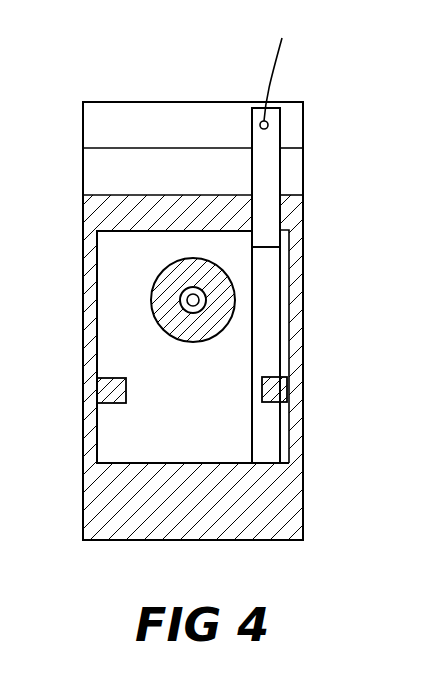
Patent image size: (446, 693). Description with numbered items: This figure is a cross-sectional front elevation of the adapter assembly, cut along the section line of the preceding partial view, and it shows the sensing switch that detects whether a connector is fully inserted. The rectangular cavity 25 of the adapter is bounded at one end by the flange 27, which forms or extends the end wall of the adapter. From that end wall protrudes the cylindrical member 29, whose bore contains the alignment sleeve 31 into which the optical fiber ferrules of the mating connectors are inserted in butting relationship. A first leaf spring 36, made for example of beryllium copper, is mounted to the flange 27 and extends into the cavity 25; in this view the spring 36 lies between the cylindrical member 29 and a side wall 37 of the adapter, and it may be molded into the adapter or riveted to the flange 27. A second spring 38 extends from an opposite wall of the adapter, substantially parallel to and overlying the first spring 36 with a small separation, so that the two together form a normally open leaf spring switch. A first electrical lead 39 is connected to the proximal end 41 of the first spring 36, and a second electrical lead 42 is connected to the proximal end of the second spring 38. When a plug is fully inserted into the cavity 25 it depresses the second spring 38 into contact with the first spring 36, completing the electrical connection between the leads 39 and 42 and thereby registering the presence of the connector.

The rectangular cavity 25 is at (227, 430).
The flange 27 is at (160, 115).
The cylindrical member 29 is at (171, 315).
The alignment sleeve 31 is at (188, 296).
The first leaf spring 36 is at (272, 181).
The side wall 37 is at (305, 275).
The second spring 38 is at (268, 348).
The first electrical lead 39 is at (275, 70).
The proximal end 41 is at (280, 131).
The second electrical lead 42 is at (303, 490).